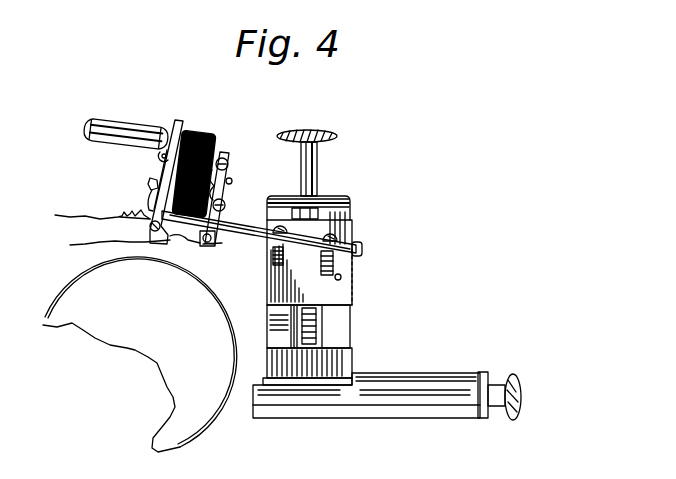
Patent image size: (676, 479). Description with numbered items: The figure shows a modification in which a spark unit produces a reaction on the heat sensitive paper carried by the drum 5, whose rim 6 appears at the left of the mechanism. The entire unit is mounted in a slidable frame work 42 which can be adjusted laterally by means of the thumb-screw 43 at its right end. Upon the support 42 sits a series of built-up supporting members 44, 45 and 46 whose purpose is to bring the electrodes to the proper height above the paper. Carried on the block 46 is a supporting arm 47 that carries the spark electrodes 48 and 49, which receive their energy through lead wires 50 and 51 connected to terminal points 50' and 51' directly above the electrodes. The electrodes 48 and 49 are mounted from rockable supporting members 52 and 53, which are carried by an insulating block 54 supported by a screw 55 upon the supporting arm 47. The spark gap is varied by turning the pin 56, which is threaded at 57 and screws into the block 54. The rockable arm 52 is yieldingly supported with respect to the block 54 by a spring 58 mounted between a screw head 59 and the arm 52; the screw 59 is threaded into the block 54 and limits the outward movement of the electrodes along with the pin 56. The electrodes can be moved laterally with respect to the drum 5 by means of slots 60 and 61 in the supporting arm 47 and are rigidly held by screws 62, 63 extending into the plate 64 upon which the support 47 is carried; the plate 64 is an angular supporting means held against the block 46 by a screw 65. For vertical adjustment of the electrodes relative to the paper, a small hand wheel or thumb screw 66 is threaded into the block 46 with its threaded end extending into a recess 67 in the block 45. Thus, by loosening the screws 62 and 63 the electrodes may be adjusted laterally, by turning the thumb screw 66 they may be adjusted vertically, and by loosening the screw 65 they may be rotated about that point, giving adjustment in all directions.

The drum 5 is at (111, 336).
The drum rim ring 6 is at (206, 440).
The slidable frame work 42 is at (440, 375).
The thumb-screw 43 is at (518, 381).
The supporting member 44 is at (352, 363).
The supporting member 45 is at (345, 336).
The block 46 is at (353, 295).
The supporting arm 47 is at (252, 226).
The spark electrode 48 is at (163, 240).
The spark electrode 49 is at (198, 247).
The lead wire 50 is at (102, 210).
The terminal point 50' is at (130, 226).
The lead wire 51 is at (111, 244).
The terminal point 51' is at (225, 249).
The rockable supporting member 52 is at (161, 161).
The rockable supporting member 53 is at (226, 190).
The insulating block 54 is at (216, 134).
The screw 55 is at (196, 241).
The pin 56 is at (90, 136).
The threaded portion 57 is at (178, 129).
The spring 58 is at (148, 198).
The screw 59 is at (148, 182).
The slot 60 is at (343, 238).
The slot 61 is at (276, 233).
The screw 62 is at (274, 263).
The screw 63 is at (335, 270).
The plate 64 is at (362, 249).
The screw 65 is at (343, 277).
The hand wheel or thumb screw 66 is at (340, 138).
The recess 67 is at (300, 330).